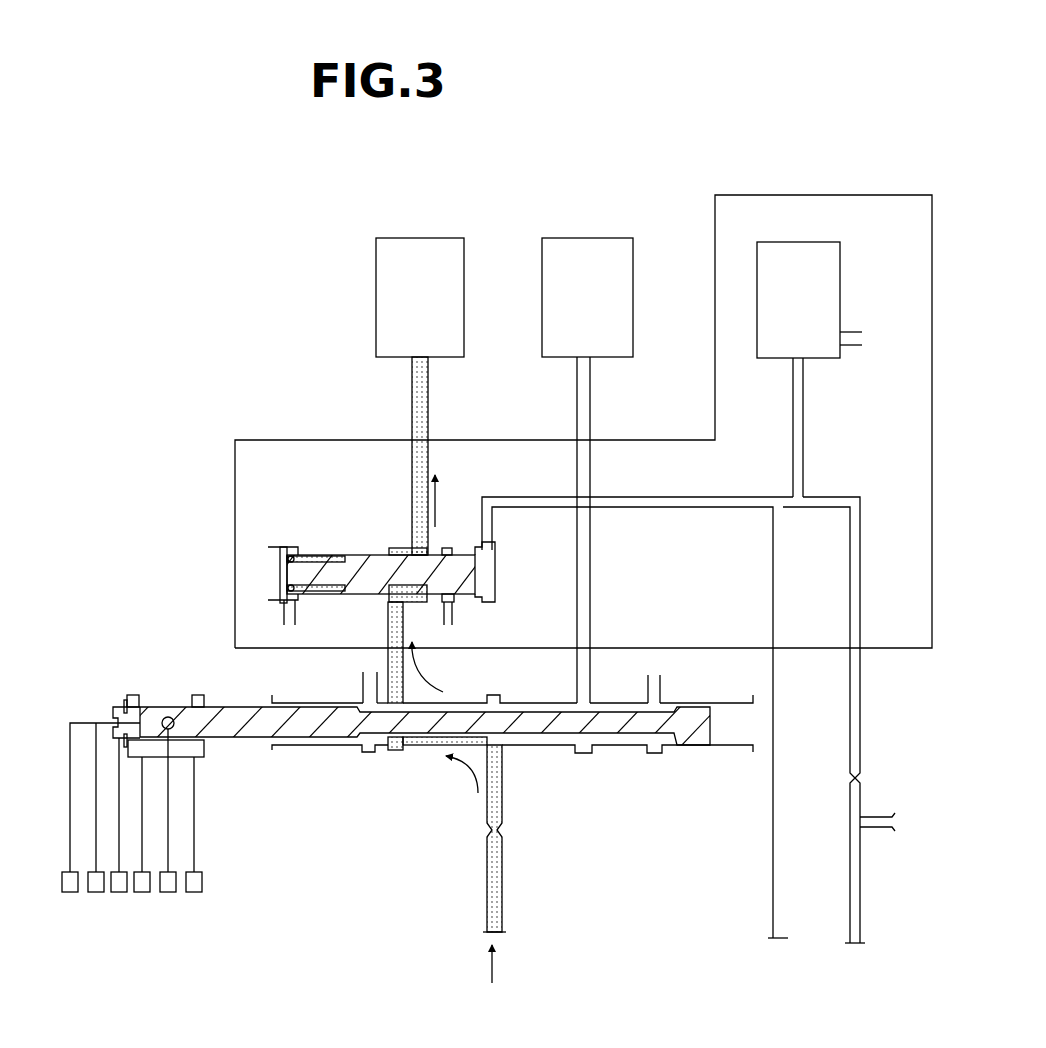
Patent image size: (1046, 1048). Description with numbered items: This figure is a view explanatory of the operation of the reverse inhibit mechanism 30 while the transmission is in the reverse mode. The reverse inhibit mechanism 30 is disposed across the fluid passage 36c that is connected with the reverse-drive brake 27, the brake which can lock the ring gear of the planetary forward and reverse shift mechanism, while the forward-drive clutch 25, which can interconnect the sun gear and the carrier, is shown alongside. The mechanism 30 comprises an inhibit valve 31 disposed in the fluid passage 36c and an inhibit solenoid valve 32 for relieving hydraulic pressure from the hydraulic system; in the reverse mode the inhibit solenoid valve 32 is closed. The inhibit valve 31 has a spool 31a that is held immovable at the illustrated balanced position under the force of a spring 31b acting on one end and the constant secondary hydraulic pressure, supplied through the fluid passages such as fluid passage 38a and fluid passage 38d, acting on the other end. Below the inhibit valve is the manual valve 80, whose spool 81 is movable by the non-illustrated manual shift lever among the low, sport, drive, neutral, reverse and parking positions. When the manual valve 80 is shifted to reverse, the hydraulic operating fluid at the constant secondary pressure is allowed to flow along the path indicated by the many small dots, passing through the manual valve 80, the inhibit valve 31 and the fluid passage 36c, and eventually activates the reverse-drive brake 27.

The reverse inhibit mechanism 30 is at (815, 193).
The reverse-drive brake 27 is at (420, 297).
The forward-drive clutch 25 is at (587, 297).
The inhibit solenoid valve 32 is at (818, 300).
The fluid passage 36c is at (412, 405).
The inhibit valve 31 is at (321, 585).
The spool 31a is at (378, 555).
The spring 31b is at (318, 552).
The fluid passage 38d is at (860, 588).
The fluid passage 38a is at (502, 898).
The manual valve 80 is at (432, 781).
The spool 81 is at (557, 747).